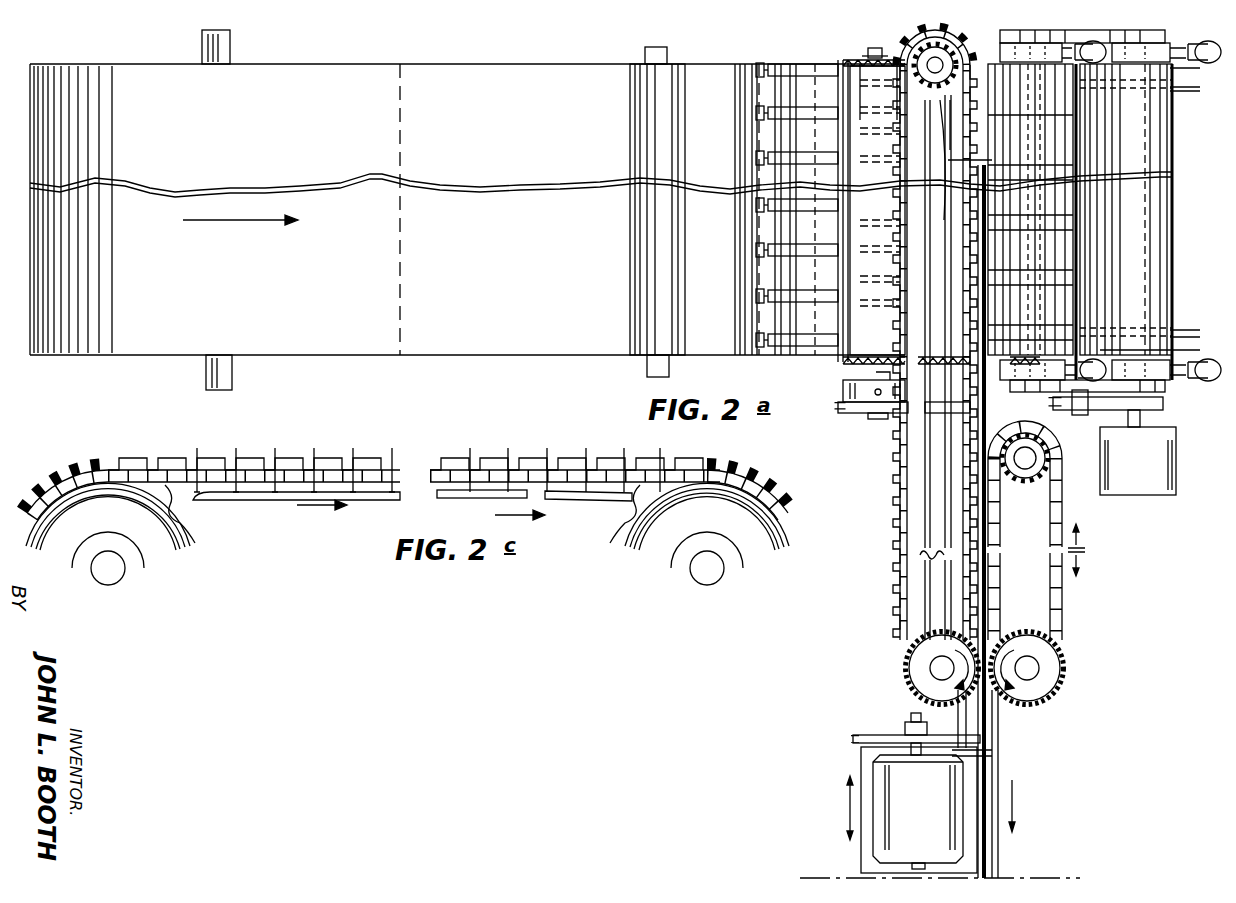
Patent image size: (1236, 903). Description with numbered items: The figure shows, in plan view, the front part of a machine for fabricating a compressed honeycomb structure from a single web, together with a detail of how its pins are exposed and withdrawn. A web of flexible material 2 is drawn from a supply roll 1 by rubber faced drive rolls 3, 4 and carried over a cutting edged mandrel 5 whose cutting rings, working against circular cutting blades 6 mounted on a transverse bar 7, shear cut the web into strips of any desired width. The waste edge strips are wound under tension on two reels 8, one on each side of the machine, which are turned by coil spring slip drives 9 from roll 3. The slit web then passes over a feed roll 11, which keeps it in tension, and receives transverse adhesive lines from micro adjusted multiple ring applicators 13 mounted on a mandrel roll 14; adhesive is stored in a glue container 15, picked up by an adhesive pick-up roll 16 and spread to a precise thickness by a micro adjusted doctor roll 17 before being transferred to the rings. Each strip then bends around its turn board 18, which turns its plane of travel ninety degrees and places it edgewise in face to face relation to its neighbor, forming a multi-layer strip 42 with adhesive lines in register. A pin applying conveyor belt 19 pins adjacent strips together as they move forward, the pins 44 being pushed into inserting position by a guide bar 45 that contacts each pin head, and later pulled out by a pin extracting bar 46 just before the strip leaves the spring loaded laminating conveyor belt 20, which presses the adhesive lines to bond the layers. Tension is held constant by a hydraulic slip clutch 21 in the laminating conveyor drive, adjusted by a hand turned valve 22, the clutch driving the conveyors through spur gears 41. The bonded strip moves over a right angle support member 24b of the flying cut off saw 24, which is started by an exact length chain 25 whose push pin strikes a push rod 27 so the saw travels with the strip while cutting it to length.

In FIG. 2A, the supply roll 1 is at (82, 335).
In FIG. 2A, the web of flexible material 2 is at (602, 348).
In FIG. 2A, the rubber faced drive roll 3 is at (883, 52).
In FIG. 2A, the rubber faced drive roll 4 is at (760, 70).
In FIG. 2A, the cutting edged mandrel 5 is at (877, 48).
In FIG. 2A, the circular cutting blades 6 is at (870, 52).
In FIG. 2A, the transverse bar 7 is at (792, 64).
In FIG. 2A, the reels 8 is at (1188, 91).
In FIG. 2A, the coil spring slip drives 9 is at (857, 63).
In FIG. 2A, the feed roll 11 is at (872, 58).
In FIG. 2A, the multiple ring applicators 13 is at (1025, 360).
In FIG. 2A, the mandrel roll 14 is at (1025, 42).
In FIG. 2A, the glue container 15 is at (1170, 385).
In FIG. 2A, the adhesive pick-up roll 16 is at (1110, 205).
In FIG. 2A, the doctor roll 17 is at (1172, 142).
In FIG. 2A, the turn board 18 is at (972, 160).
In FIG. 2A, the pin applying conveyor belt 19 is at (900, 505).
In FIG. 2C, the pin applying conveyor belt 19 is at (72, 462).
In FIG. 2A, the laminating conveyor belt 20 is at (1065, 585).
In FIG. 2A, the hydraulic slip clutch 21 is at (840, 396).
In FIG. 2A, the hand turned valve 22 is at (875, 391).
In FIG. 2A, the flying cut off saw 24 is at (888, 780).
In FIG. 2A, the right angle support member 24b is at (998, 775).
In FIG. 2A, the exact length chain 25 is at (925, 515).
In FIG. 2A, the push rod 27 is at (958, 720).
In FIG. 2A, the spur gears 41 is at (905, 672).
In FIG. 2A, the multi-layer strip 42 is at (992, 755).
In FIG. 2A, the pins 44 is at (1150, 495).
In FIG. 2C, the pins 44 is at (236, 455).
In FIG. 2C, the guide bar 45 is at (350, 500).
In FIG. 2C, the pin extracting bar 46 is at (600, 497).